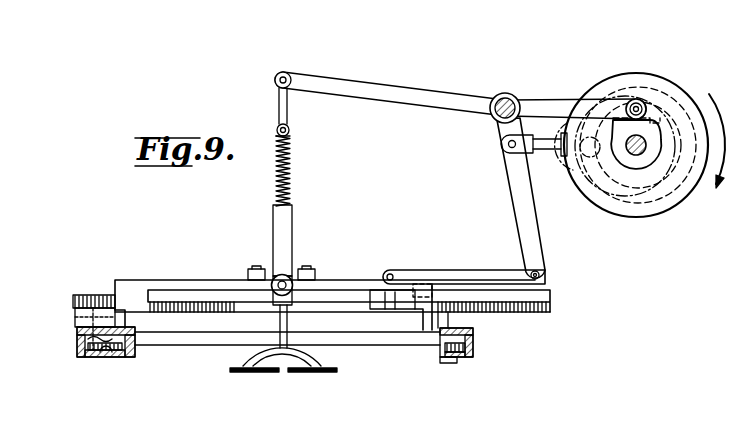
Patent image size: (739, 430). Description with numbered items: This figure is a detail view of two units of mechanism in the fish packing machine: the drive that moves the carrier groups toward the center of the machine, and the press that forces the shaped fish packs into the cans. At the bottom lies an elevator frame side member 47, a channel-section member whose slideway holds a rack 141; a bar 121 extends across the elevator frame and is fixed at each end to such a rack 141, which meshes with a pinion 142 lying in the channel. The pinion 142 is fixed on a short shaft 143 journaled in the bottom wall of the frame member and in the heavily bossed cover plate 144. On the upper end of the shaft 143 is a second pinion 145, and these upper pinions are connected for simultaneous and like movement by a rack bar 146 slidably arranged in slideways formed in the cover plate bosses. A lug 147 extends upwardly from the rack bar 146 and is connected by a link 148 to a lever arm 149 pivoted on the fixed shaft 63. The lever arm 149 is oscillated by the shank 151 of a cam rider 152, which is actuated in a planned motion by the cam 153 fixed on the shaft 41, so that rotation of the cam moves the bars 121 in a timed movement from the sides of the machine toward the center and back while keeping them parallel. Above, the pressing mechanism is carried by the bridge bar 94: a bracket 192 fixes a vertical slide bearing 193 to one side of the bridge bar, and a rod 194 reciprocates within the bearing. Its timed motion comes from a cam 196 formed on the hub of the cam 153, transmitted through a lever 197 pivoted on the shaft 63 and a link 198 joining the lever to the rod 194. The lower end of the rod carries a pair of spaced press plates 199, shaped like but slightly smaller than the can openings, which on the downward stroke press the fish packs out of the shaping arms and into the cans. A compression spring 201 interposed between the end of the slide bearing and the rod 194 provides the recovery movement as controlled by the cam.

The shaft 41 is at (647, 152).
The elevator frame side member 47 is at (86, 351).
The fixed shaft 63 is at (507, 98).
The bridge bar 94 is at (180, 279).
The bar 121 is at (219, 341).
The rack 141 is at (95, 352).
The pinion 142 is at (106, 352).
The short shaft 143 is at (78, 341).
The cover plate 144 is at (76, 323).
The second pinion 145 is at (73, 300).
The rack bar 146 is at (226, 302).
The lug 147 is at (389, 298).
The link 148 is at (495, 273).
The lever arm 149 is at (510, 192).
The shank 151 is at (552, 149).
The cam rider 152 is at (565, 137).
The cam 153 is at (633, 80).
The bracket 192 is at (310, 277).
The slide bearing 193 is at (290, 226).
The rod 194 is at (290, 170).
The cam 196 is at (624, 153).
The lever 197 is at (455, 87).
The link 198 is at (285, 104).
The press plates 199 is at (297, 392).
The compression spring 201 is at (290, 158).